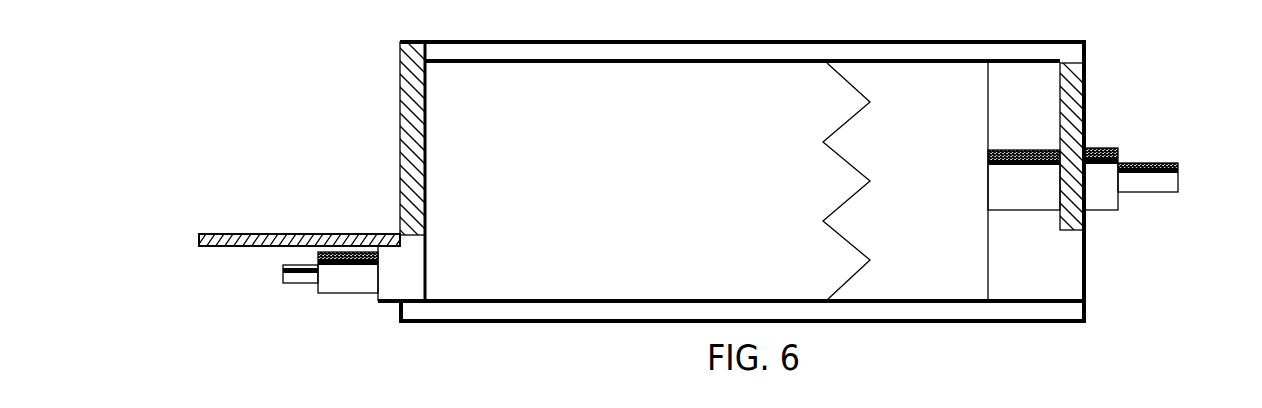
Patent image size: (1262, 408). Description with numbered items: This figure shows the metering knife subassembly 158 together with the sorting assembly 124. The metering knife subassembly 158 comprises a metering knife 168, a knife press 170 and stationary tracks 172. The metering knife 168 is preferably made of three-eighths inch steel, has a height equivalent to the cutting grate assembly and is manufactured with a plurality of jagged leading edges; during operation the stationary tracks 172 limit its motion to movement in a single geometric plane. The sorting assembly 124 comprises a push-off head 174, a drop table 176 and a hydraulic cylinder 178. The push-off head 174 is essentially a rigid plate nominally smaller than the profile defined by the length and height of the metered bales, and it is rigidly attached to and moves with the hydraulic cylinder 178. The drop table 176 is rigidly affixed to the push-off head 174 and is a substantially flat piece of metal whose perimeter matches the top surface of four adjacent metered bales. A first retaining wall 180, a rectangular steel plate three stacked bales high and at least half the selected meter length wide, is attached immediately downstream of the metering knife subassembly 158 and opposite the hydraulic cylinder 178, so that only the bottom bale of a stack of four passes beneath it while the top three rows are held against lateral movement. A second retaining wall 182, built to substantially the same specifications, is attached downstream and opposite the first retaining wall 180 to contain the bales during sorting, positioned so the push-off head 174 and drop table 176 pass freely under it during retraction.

The sorting assembly 124 is at (286, 300).
The metering knife subassembly 158 is at (1200, 123).
The metering knife 168 is at (965, 202).
The knife press 170 is at (1127, 180).
The stationary tracks 172 is at (912, 48).
The push-off head 174 is at (407, 259).
The drop table 176 is at (295, 233).
The hydraulic cylinder 178 is at (367, 280).
The first retaining wall 180 is at (1073, 112).
The second retaining wall 182 is at (407, 102).